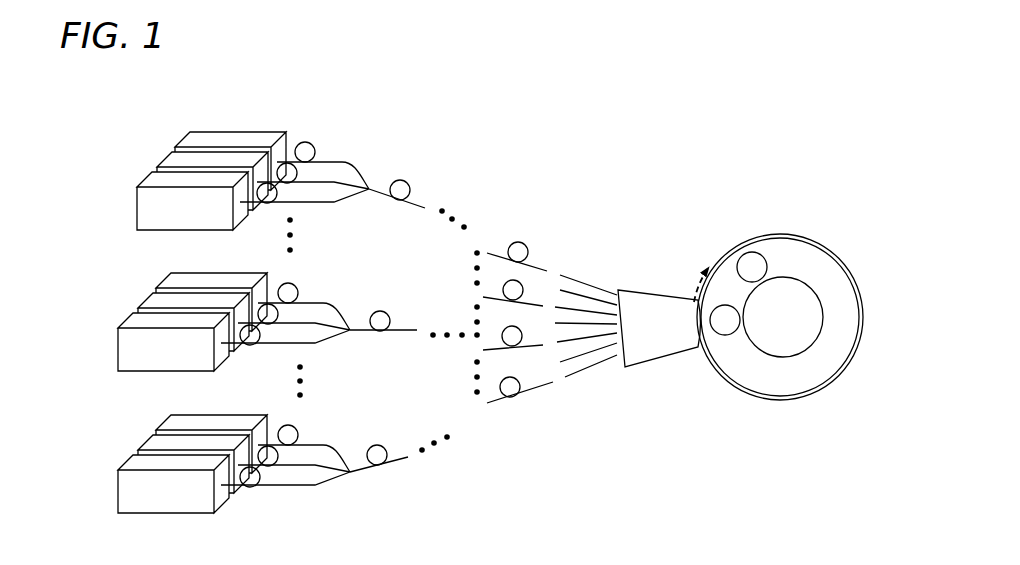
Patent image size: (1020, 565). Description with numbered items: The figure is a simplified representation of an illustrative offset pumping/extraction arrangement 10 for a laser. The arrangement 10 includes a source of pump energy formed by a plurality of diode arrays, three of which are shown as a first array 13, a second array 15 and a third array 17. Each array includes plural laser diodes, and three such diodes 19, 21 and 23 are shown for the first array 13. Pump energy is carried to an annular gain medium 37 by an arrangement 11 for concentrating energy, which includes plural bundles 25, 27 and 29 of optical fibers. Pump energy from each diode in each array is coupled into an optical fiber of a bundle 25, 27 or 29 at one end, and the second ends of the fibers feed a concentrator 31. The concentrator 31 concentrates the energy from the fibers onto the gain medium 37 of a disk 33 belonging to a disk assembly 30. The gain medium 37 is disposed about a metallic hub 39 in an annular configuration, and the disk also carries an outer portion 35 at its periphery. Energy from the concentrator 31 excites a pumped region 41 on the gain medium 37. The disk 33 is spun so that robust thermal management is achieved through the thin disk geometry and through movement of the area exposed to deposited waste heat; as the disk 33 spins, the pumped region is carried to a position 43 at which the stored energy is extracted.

The offset pumping/extraction arrangement 10 is at (727, 100).
The arrangement for concentrating energy 11 is at (500, 175).
The first diode array 13 is at (238, 130).
The second diode array 15 is at (112, 306).
The third diode array 17 is at (112, 448).
The laser diode 19 is at (185, 142).
The laser diode 21 is at (160, 165).
The laser diode 23 is at (143, 178).
The bundle of optical fibers 25 is at (358, 150).
The bundle of optical fibers 27 is at (340, 343).
The bundle of optical fibers 29 is at (350, 488).
The disk assembly 30 is at (740, 230).
The concentrator 31 is at (660, 290).
The disk 33 is at (845, 258).
The drum surface layer 35 is at (863, 315).
The annular gain medium 37 is at (798, 378).
The metallic hub 39 is at (778, 337).
The pumped region 41 is at (728, 337).
The extraction position 43 is at (752, 252).